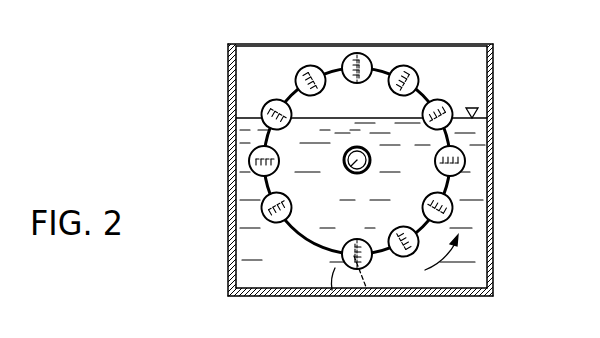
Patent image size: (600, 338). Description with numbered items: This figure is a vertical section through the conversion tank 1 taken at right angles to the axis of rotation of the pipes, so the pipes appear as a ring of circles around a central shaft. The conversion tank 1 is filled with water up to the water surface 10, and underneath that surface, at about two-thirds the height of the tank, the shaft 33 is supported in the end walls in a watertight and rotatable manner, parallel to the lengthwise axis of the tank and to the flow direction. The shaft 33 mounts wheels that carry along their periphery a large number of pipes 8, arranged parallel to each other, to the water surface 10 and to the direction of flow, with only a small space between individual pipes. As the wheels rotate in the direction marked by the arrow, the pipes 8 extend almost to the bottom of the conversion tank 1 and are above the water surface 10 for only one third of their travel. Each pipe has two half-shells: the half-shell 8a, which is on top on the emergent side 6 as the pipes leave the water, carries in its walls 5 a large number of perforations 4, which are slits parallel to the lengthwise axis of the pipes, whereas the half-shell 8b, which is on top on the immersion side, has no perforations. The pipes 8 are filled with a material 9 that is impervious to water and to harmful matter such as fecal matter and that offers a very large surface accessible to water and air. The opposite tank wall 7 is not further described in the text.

The conversion tank 1 is at (361, 170).
The perforations 4 is at (400, 250).
The walls 5 is at (337, 268).
The emergent side 6 is at (497, 146).
The left side wall 7 is at (228, 148).
The pipes 8 is at (363, 46).
The half-shell 8a is at (344, 63).
The half-shell 8b is at (375, 60).
The material 9 is at (361, 262).
The water surface 10 is at (474, 113).
The shaft 33 is at (352, 165).